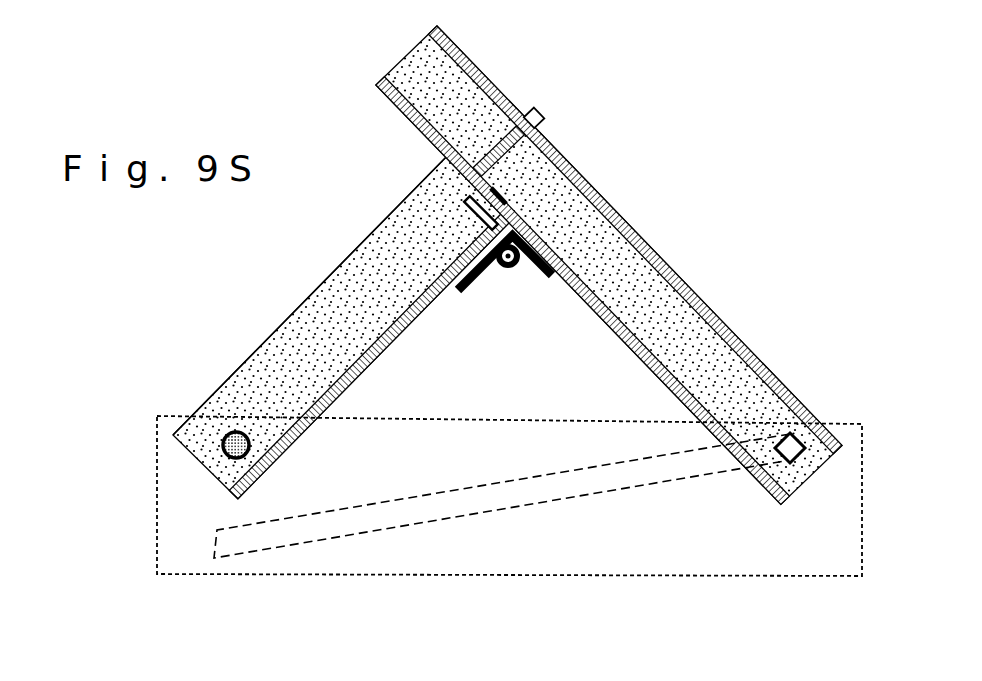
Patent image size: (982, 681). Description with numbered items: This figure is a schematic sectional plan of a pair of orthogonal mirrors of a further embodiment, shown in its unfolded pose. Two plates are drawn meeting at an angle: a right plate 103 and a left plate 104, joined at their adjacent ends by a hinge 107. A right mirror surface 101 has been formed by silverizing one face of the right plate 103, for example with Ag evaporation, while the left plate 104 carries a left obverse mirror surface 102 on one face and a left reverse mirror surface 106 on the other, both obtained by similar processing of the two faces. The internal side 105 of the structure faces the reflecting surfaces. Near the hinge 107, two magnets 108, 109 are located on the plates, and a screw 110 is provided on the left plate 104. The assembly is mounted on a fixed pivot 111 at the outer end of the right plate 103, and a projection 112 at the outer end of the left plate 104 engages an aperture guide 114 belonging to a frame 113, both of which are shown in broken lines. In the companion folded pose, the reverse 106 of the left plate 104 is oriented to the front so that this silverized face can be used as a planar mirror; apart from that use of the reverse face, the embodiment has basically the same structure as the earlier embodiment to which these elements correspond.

The right mirror surface 101 is at (386, 370).
The left obverse mirror surface 102 is at (616, 335).
The right plate 103 is at (352, 316).
The left plate 104 is at (609, 265).
The internal side 105 is at (445, 172).
The left reverse mirror surface 106 is at (686, 280).
The hinge 107 is at (514, 268).
The magnet 108 is at (468, 212).
The magnet 109 is at (506, 196).
The screw 110 is at (534, 108).
The fixed pivot 111 is at (228, 433).
The projection 112 is at (789, 433).
The frame 113 is at (516, 414).
The aperture guide 114 is at (262, 561).